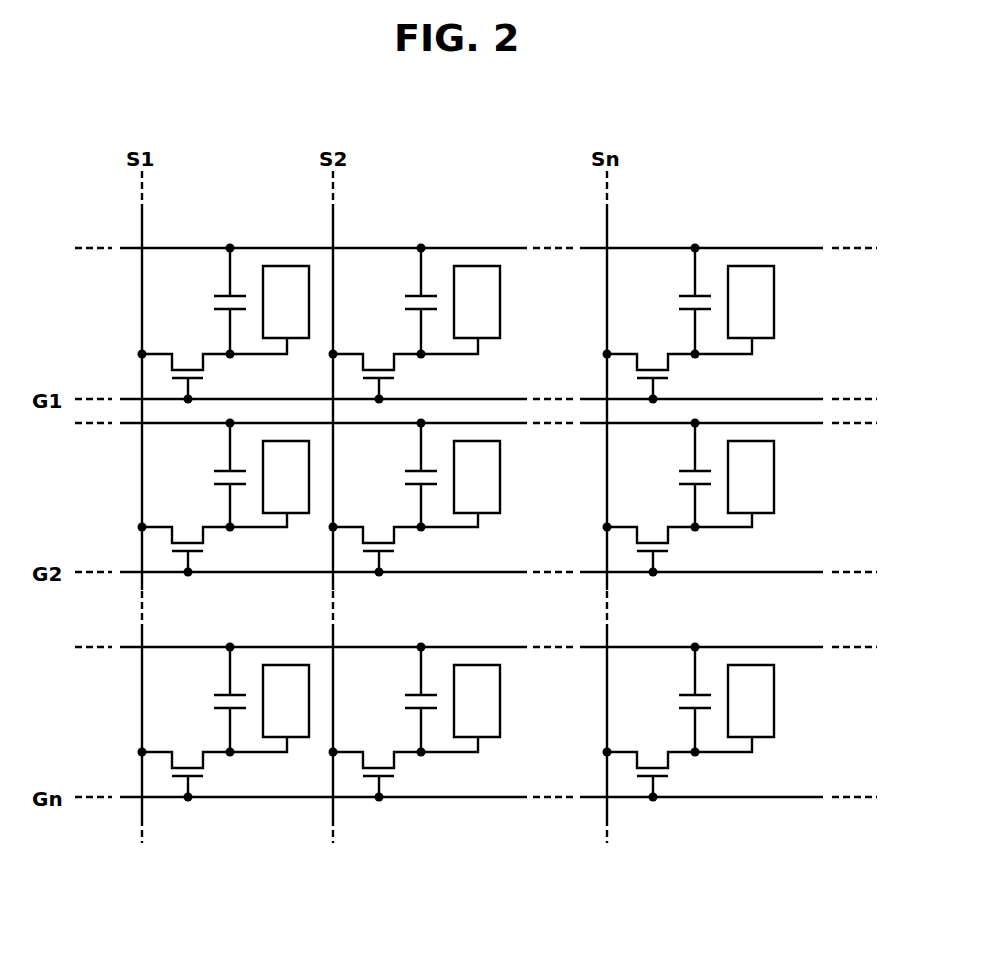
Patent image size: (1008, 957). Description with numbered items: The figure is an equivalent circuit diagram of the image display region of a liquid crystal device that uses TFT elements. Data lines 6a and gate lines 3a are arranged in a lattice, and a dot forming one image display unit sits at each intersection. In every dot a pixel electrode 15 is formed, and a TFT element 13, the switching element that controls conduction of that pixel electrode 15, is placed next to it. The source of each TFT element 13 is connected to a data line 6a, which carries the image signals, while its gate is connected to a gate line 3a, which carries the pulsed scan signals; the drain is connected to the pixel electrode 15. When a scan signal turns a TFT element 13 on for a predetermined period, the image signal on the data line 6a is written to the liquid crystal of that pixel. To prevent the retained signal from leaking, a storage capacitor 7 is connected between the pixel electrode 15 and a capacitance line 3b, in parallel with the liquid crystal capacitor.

The gate line 3a is at (857, 762).
The capacitance line 3b is at (831, 677).
The data line 6a is at (679, 183).
The storage capacitor 7 is at (214, 303).
The TFT element 13 is at (206, 378).
The pixel electrode 15 is at (774, 318).